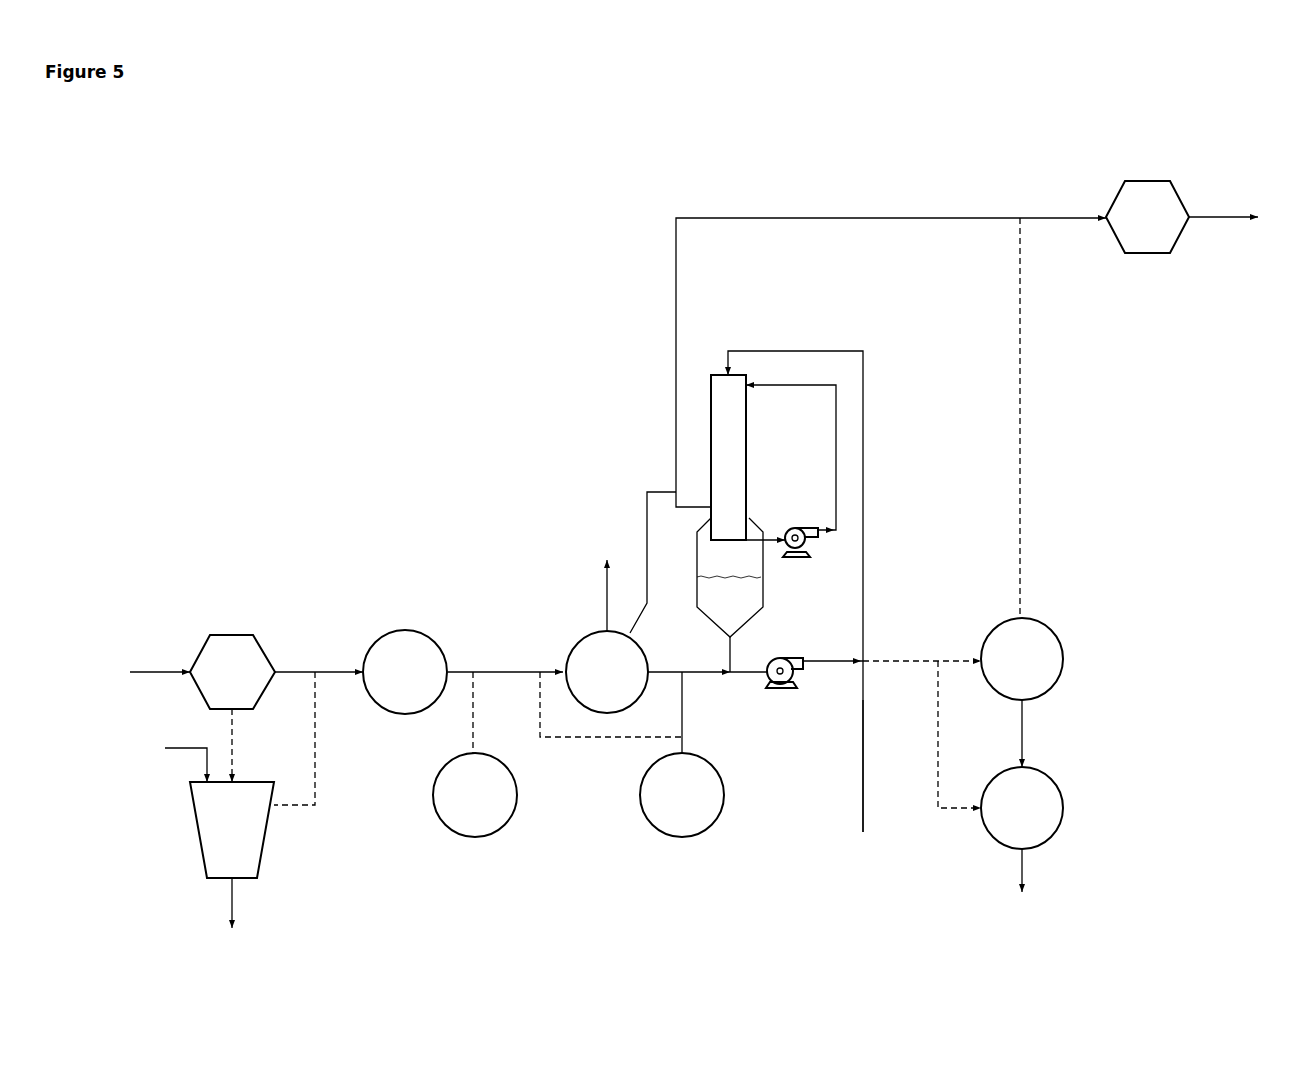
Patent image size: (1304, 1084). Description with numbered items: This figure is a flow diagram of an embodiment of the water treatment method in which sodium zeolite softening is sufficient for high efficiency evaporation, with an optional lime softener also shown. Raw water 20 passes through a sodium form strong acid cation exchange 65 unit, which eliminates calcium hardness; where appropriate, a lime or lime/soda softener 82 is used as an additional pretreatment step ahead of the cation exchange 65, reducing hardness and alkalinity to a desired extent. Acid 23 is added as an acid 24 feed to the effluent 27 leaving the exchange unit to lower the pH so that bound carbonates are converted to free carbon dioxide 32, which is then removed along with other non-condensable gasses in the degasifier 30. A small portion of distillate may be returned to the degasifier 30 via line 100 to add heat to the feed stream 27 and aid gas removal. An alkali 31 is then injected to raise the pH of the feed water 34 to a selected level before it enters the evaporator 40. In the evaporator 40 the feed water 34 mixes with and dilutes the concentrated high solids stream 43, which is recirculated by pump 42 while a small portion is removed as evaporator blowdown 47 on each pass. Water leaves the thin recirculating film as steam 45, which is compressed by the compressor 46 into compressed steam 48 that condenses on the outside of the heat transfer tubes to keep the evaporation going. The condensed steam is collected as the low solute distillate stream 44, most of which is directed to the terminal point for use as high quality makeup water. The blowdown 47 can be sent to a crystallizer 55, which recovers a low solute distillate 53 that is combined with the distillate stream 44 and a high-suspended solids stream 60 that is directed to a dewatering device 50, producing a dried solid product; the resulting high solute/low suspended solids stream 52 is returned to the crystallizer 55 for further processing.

The raw water 20 is at (262, 636).
The sodium form strong acid cation exchange 65 is at (437, 643).
The lime or lime/soda softener 82 is at (262, 782).
The effluent 27 is at (528, 672).
The acid feed 24 is at (476, 712).
The acid 23 is at (495, 758).
The degasifier 30 is at (644, 652).
The carbon dioxide 32 is at (609, 586).
The line 100 is at (649, 575).
The feed water 34 is at (690, 672).
The alkali 31 is at (720, 772).
The pump 42 is at (784, 657).
The evaporator 40 is at (747, 422).
The compressed steam 48 is at (792, 385).
The concentrated high solids stream 43 is at (864, 417).
The distillate stream 44 is at (677, 326).
The steam 45 is at (770, 528).
The compressor 46 is at (803, 527).
The evaporator blowdown 47 is at (865, 812).
The high solute/low suspended solids stream 52 is at (940, 746).
The low solute distillate 53 is at (1022, 568).
The crystallizer 55 is at (1052, 629).
The high-suspended solids stream 60 is at (1024, 731).
The dewatering device 50 is at (1052, 777).